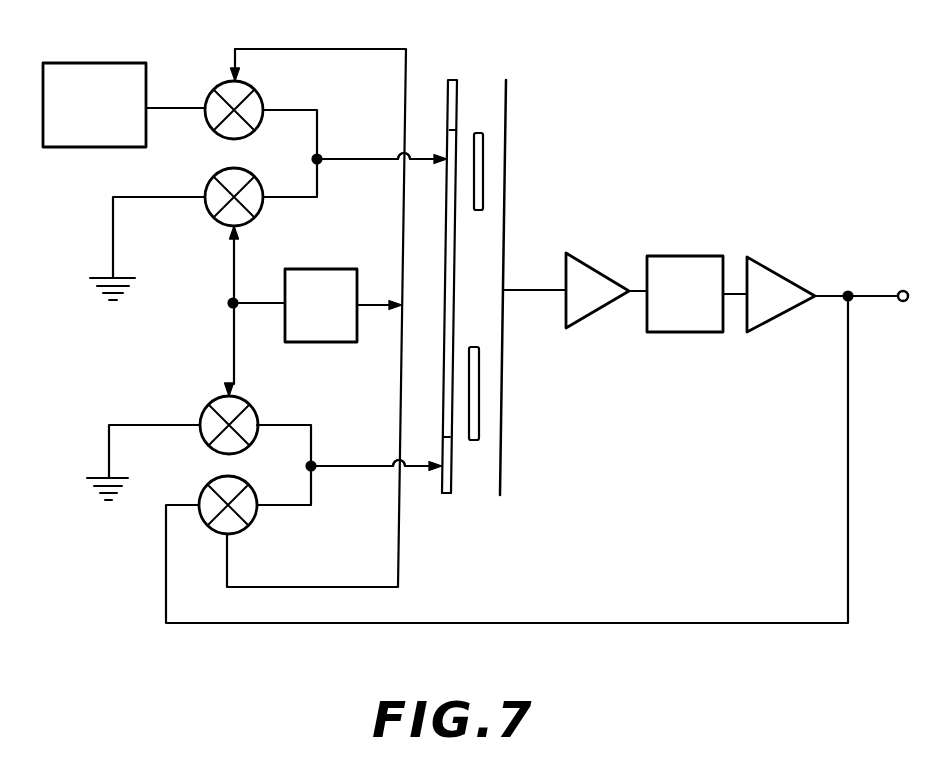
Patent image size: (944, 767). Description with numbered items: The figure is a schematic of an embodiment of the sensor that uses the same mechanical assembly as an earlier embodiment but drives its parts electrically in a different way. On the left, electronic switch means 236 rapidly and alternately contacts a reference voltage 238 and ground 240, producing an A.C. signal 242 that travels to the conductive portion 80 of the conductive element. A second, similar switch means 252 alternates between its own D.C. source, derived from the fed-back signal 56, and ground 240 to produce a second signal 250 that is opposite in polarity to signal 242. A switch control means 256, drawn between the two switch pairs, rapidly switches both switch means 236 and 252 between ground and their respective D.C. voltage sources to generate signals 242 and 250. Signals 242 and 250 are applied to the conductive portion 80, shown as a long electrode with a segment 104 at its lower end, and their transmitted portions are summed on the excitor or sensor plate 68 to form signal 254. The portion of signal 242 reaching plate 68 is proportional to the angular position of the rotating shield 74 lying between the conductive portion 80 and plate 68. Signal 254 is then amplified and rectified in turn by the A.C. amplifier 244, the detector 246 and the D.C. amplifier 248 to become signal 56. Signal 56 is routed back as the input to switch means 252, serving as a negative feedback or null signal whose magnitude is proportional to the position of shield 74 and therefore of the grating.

The reference voltage 238 is at (112, 78).
The electronic switch means 236 is at (217, 133).
The ground 240 is at (92, 286).
The signal 242 is at (383, 130).
The switch control means 256 is at (303, 337).
The switch means 252 is at (207, 437).
The second signal 250 is at (376, 438).
The conductive portion 80 is at (448, 138).
The rotating shield 74 is at (484, 132).
The excitor or sensor plate 68 is at (506, 100).
The electrode segment 104 is at (447, 493).
The signal 254 is at (530, 288).
The A.C. amplifier 244 is at (600, 278).
The detector 246 is at (682, 262).
The D.C. amplifier 248 is at (782, 282).
The electrical signal 56 is at (884, 271).